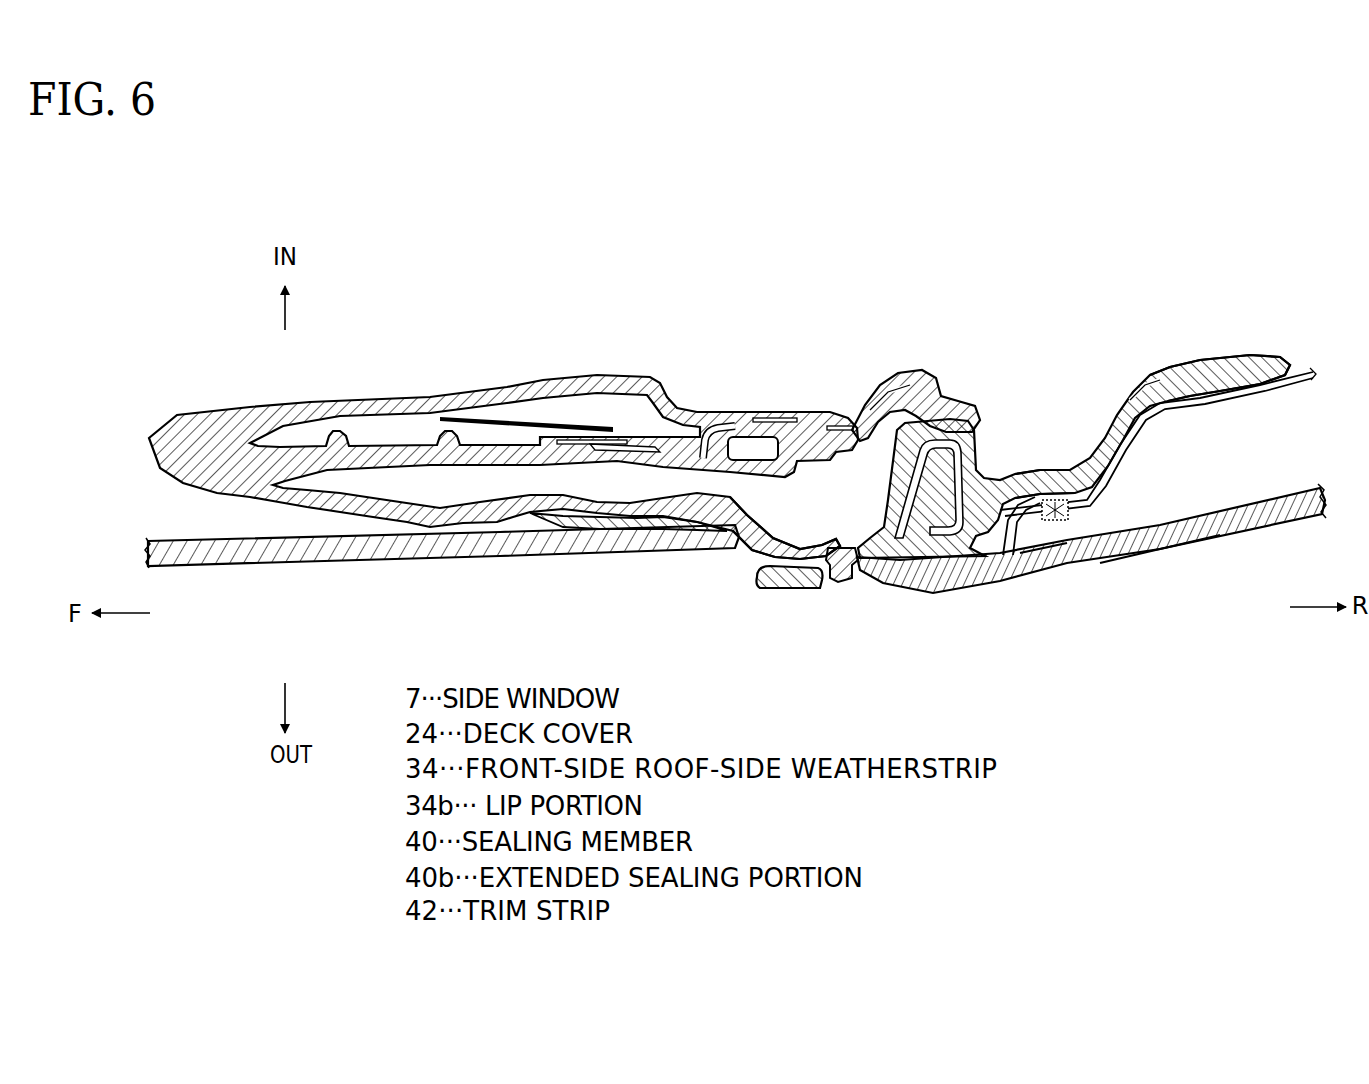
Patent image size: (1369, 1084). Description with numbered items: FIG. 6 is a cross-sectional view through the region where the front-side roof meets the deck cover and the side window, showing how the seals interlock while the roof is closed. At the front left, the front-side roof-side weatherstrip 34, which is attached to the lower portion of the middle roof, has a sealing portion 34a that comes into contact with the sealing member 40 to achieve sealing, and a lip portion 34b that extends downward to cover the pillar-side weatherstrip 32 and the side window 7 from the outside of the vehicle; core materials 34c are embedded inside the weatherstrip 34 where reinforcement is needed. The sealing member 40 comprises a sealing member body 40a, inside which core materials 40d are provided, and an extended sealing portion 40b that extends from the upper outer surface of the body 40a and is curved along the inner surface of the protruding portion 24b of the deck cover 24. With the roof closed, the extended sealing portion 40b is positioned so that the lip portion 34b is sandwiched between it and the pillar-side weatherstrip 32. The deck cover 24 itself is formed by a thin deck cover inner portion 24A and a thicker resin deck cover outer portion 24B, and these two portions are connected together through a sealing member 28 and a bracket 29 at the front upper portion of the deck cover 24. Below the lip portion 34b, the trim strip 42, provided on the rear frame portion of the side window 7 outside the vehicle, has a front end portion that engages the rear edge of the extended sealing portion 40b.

The side window 7 is at (330, 567).
The deck cover 24 is at (1097, 566).
The deck cover inner portion 24A is at (1153, 424).
The deck cover outer portion 24B is at (1015, 582).
The protruding portion 24b is at (1165, 549).
The sealing member 28 is at (1072, 511).
The bracket 29 is at (1045, 560).
The pillar-side weatherstrip 32 is at (628, 522).
The front-side roof-side weatherstrip 34 is at (513, 389).
The sealing portion 34a is at (965, 405).
The lip portion 34b is at (720, 562).
The core material 34c is at (717, 425).
The sealing member 40 is at (1066, 459).
The sealing member body 40a is at (1140, 381).
The extended sealing portion 40b is at (787, 591).
The core material 40d is at (1043, 483).
The trim strip 42 is at (843, 586).